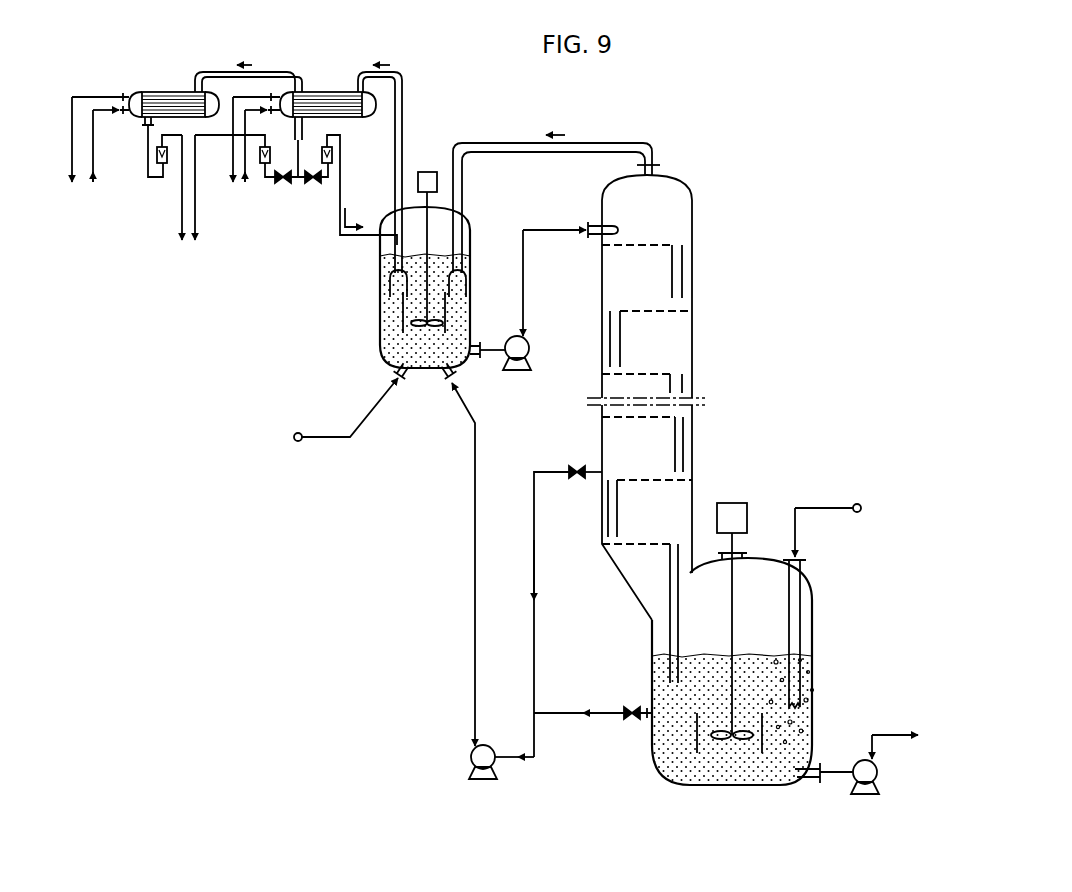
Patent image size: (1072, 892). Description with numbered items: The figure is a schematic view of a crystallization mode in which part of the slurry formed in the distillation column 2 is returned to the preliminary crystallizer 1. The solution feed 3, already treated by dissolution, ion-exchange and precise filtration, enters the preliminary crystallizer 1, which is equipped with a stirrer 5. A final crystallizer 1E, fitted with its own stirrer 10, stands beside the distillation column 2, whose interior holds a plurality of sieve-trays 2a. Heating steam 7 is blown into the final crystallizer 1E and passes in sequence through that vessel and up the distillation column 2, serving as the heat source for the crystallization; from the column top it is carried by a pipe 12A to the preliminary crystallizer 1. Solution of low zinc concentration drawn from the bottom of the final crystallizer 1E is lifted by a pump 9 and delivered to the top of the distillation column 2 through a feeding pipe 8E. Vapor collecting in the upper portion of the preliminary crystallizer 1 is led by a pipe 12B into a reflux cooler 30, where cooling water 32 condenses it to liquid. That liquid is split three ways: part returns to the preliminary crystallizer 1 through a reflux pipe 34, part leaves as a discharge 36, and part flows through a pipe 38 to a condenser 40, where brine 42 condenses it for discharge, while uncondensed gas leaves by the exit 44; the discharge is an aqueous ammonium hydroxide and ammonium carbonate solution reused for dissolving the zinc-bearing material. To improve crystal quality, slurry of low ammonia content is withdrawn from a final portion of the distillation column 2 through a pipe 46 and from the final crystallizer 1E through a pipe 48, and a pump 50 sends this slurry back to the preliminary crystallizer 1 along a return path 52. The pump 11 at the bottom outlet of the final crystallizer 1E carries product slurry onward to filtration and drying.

The preliminary crystallizer 1 is at (380, 290).
The final crystallizer 1E is at (813, 640).
The distillation column 2 is at (693, 342).
The sieve-trays 2a is at (650, 245).
The solution feed 3 is at (337, 413).
The stirrer 5 is at (425, 246).
The heating steam 7 is at (832, 605).
The feeding pipe 8E is at (549, 231).
The pump 9 is at (529, 348).
The stirrer 10 is at (732, 621).
The discharge pump 11 is at (877, 773).
The pipe 12A is at (609, 143).
The pipe 12B is at (402, 116).
The reflux cooler 30 is at (327, 94).
The cooling water 32 is at (247, 153).
The reflux pipe 34 is at (340, 178).
The discharge 36 is at (220, 203).
The pipe 38 is at (283, 73).
The condenser 40 is at (162, 92).
The brine 42 is at (96, 152).
The exit for uncondensed gas 44 is at (152, 183).
The pipe 46 is at (544, 472).
The pipe 48 is at (599, 715).
The pump 50 is at (500, 739).
The return path 52 is at (472, 567).